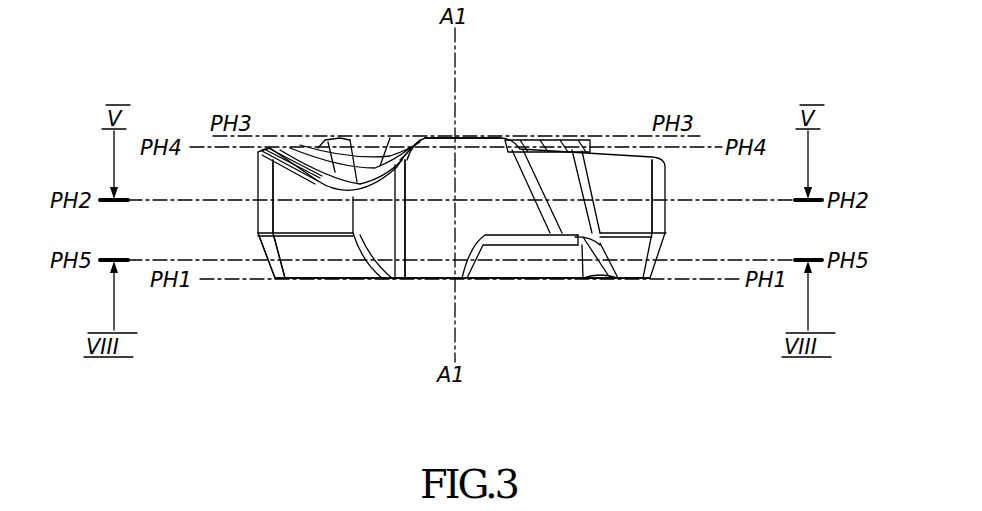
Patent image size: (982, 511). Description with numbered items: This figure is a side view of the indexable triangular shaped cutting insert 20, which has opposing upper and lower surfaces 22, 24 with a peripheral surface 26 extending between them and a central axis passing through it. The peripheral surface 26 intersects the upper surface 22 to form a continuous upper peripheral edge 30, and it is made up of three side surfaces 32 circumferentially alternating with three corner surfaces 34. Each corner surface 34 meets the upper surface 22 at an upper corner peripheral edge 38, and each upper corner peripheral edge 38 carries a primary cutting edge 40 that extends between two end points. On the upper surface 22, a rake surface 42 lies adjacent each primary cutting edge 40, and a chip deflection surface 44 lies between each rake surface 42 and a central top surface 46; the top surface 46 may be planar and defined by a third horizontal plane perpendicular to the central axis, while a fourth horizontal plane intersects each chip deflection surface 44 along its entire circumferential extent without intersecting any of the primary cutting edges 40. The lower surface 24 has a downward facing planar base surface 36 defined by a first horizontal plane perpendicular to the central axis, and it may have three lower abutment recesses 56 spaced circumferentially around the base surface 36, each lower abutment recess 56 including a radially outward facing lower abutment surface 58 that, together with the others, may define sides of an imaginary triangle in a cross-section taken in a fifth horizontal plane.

The cutting insert 20 is at (598, 96).
The upper surface 22 is at (478, 128).
The lower surface 24 is at (365, 291).
The peripheral surface 26 is at (282, 217).
The upper peripheral edge 30 is at (405, 136).
The side surface 32 is at (473, 193).
The corner surface 34 is at (638, 215).
The base surface 36 is at (317, 280).
The upper corner peripheral edge 38 is at (562, 130).
The primary cutting edge 40 is at (262, 152).
The rake surface 42 is at (289, 163).
The chip deflection surface 44 is at (355, 140).
The top surface 46 is at (520, 140).
The lower abutment recess 56 is at (570, 281).
The lower abutment surface 58 is at (523, 281).